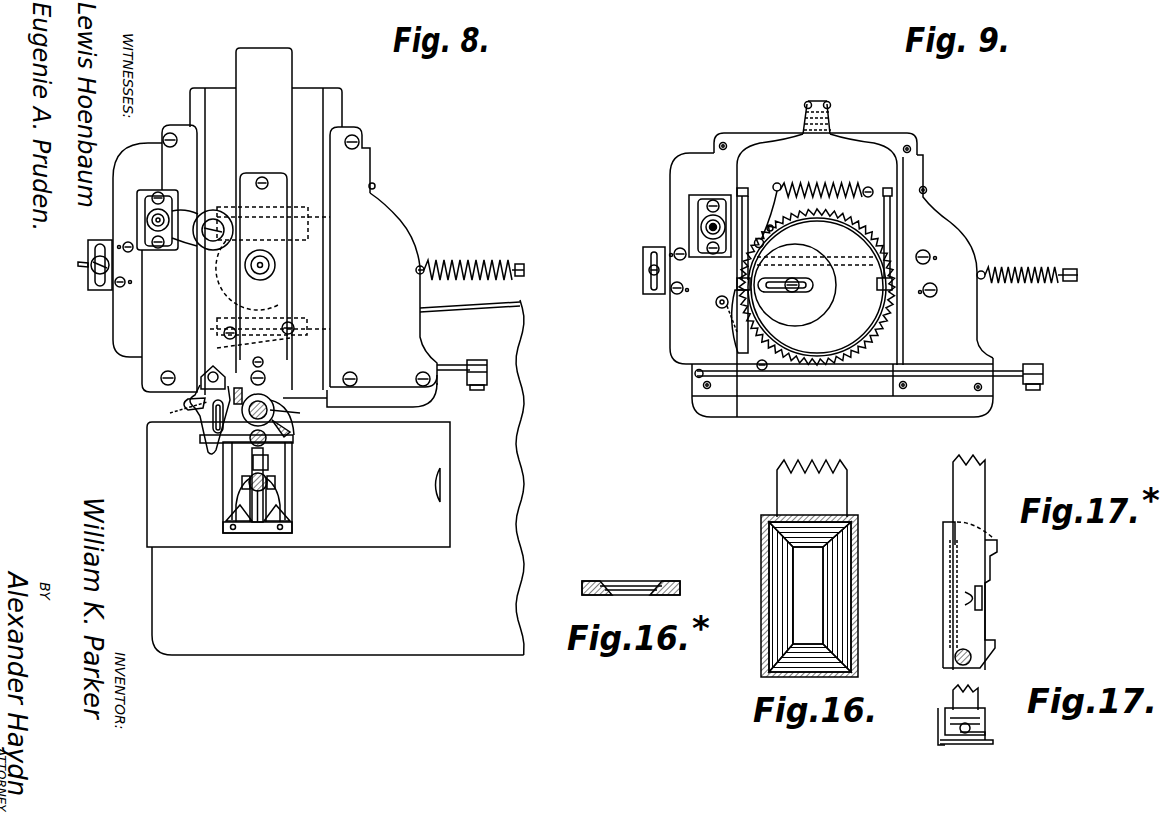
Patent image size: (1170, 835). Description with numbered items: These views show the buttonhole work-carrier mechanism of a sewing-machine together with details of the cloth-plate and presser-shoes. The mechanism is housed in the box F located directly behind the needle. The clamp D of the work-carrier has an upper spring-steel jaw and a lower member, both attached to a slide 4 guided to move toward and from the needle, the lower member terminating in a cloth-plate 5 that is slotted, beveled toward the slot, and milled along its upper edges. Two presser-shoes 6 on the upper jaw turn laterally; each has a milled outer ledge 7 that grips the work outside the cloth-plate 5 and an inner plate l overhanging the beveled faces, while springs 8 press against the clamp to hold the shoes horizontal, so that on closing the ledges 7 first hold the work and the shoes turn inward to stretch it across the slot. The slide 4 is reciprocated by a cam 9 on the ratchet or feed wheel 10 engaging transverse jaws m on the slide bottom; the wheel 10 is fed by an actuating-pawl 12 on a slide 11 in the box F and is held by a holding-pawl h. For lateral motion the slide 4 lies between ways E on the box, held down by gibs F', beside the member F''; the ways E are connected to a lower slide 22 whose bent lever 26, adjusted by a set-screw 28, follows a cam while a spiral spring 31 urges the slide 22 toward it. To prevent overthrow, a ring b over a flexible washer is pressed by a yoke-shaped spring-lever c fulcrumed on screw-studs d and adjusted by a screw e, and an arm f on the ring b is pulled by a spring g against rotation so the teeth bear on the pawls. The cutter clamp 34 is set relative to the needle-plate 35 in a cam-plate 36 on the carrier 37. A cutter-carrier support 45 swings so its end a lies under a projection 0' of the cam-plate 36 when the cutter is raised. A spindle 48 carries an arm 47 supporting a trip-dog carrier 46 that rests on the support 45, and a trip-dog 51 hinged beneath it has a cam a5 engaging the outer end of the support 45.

In FIG. 8, the slide 4 is at (266, 243).
In FIG. 8, the cloth-plate 5 is at (258, 520).
The cloth-plate 5 is at (631, 578).
In FIG. 16, the cloth-plate 5 is at (809, 596).
In FIG. 8, the presser-shoes 6 is at (232, 509).
The presser-shoes 6 is at (994, 548).
In FIG. 17, the presser-shoes 6 is at (948, 722).
In FIG. 17, the outer side ledges 7 is at (946, 746).
The springs 8 is at (958, 625).
In FIG. 17, the springs 8 is at (952, 730).
In FIG. 8, the cam 9 is at (275, 282).
In FIG. 9, the cam 9 is at (813, 285).
In FIG. 9, the ratchet or feed wheel 10 is at (817, 287).
In FIG. 8, the slide 11 is at (452, 374).
In FIG. 9, the slide 11 is at (876, 373).
In FIG. 9, the actuating-pawl 12 is at (795, 373).
In FIG. 8, the lower slide 22 is at (88, 285).
In FIG. 9, the lower slide 22 is at (1050, 268).
In FIG. 8, the bent lever 26 is at (78, 264).
In FIG. 9, the bent lever 26 is at (643, 272).
In FIG. 8, the set-screw 28 is at (88, 254).
In FIG. 9, the set-screw 28 is at (648, 284).
In FIG. 8, the spiral spring 31 is at (472, 262).
In FIG. 9, the spiral spring 31 is at (1012, 286).
In FIG. 8, the clamp 34 is at (268, 462).
In FIG. 8, the needle-plate 35 is at (293, 486).
In FIG. 8, the cam-plate 36 is at (218, 442).
In FIG. 8, the carrier 37 is at (294, 443).
In FIG. 8, the cutter-carrier support 45 is at (246, 420).
In FIG. 8, the trip-dog carrier 46 is at (218, 326).
In FIG. 8, the arm 47 is at (188, 243).
In FIG. 8, the spindle 48 is at (140, 220).
In FIG. 9, the spindle 48 is at (701, 226).
In FIG. 8, the trip-dog 51 is at (190, 428).
In FIG. 8, the clamp D is at (264, 219).
In FIG. 16, the clamp D is at (797, 500).
The clamp D is at (966, 493).
In FIG. 8, the ways E is at (424, 218).
In FIG. 9, the ways E is at (681, 176).
In FIG. 9, the box F is at (829, 136).
In FIG. 8, the gibs F' is at (383, 257).
In FIG. 8, the left plate F'' is at (169, 243).
In FIG. 8, the end of support a is at (300, 414).
In FIG. 8, the cam a5 is at (192, 434).
In FIG. 9, the ring b is at (890, 306).
In FIG. 9, the yoke-shaped spring-lever c is at (908, 244).
In FIG. 8, the screw-studs d is at (375, 188).
In FIG. 9, the screw-studs d is at (737, 191).
In FIG. 9, the adjusting-screw e is at (818, 101).
In FIG. 9, the arm f is at (769, 208).
In FIG. 9, the spring g is at (830, 190).
In FIG. 9, the holding-pawl h is at (735, 340).
In FIG. 8, the inner faces or plates l is at (242, 530).
The inner faces or plates l is at (985, 651).
In FIG. 17, the inner faces or plates l is at (969, 743).
In FIG. 8, the jaws m is at (283, 273).
In FIG. 8, the projection 0' is at (290, 431).